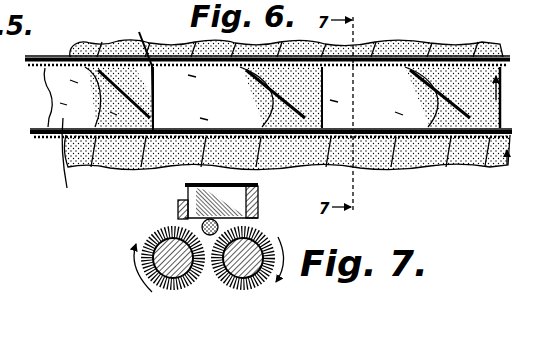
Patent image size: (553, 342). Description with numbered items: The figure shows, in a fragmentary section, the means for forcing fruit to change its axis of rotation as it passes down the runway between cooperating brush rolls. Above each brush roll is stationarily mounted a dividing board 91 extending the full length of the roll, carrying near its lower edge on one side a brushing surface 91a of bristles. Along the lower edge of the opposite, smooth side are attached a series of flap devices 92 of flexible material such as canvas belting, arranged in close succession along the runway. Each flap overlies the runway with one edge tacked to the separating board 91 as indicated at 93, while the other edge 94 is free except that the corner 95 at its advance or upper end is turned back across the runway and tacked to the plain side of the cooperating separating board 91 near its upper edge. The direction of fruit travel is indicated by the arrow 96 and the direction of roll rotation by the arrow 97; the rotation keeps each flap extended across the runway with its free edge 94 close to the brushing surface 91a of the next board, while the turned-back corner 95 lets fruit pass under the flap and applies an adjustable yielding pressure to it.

In FIG. 6, the dividing board 91 is at (43, 62).
In FIG. 7, the dividing board 91 is at (247, 198).
In FIG. 6, the brushing surface 91a is at (45, 70).
In FIG. 7, the brushing surface 91a is at (178, 210).
In FIG. 6, the flap device 92 is at (376, 82).
In FIG. 6, the securing of flap edge 93 is at (322, 134).
In FIG. 6, the free edge of flap 94 is at (83, 63).
In FIG. 6, the turned-back corner of flap 95 is at (458, 85).
In FIG. 6, the arrow indicating direction of fruit travel 96 is at (545, 103).
In FIG. 6, the arrow indicating direction of roll rotation 97 is at (518, 162).